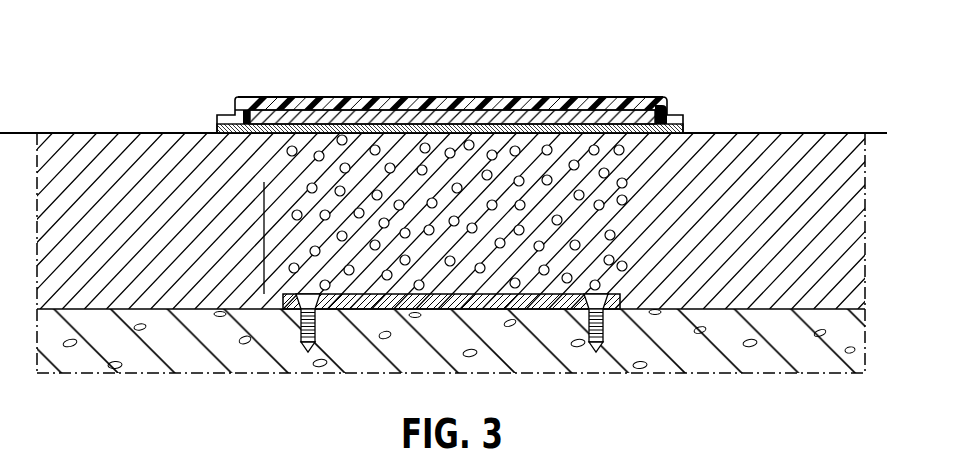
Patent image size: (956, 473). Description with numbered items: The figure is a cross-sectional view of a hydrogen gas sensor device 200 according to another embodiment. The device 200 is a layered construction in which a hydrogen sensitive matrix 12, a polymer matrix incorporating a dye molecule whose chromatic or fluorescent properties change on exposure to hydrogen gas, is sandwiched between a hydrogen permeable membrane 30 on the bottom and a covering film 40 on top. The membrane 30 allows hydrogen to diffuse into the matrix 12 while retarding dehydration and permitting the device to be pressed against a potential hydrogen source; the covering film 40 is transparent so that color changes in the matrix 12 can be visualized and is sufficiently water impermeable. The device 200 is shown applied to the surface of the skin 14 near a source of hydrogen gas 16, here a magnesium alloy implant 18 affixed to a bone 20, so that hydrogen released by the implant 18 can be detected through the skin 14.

The hydrogen gas sensor 200 is at (245, 74).
The hydrogen sensitive matrix 12 is at (303, 116).
The covering film 40 is at (393, 99).
The hydrogen permeable membrane 30 is at (597, 129).
The skin 14 is at (140, 141).
The source of hydrogen gas 16 is at (264, 182).
The magnesium alloy implant 18 is at (484, 300).
The bone 20 is at (222, 373).